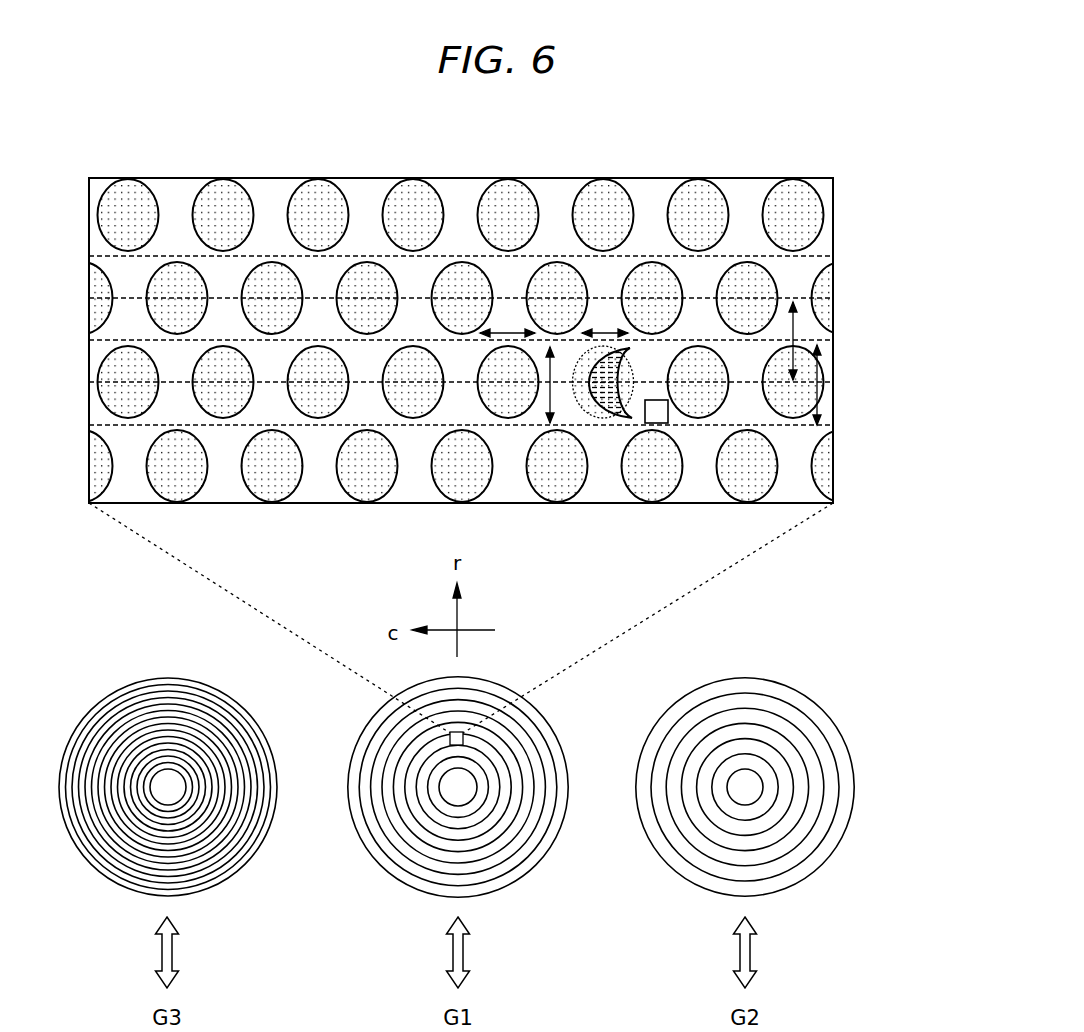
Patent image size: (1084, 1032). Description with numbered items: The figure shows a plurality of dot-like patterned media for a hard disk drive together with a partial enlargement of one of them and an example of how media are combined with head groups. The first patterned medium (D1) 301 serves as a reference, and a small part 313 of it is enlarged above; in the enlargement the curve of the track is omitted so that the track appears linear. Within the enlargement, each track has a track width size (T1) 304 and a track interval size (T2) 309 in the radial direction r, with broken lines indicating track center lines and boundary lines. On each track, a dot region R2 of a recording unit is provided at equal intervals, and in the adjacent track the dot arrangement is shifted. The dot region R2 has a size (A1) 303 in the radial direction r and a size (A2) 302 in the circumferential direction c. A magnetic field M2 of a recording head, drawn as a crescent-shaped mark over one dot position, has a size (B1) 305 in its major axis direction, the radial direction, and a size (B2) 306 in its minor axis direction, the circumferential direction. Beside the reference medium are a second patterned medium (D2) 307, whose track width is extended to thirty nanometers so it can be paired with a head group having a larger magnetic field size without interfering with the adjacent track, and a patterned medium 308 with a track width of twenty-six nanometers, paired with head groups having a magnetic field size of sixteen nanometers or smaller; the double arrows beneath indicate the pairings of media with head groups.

The first patterned medium (D1) 301 is at (551, 737).
The size (A2) of the dot region in the circumferential direction 302 is at (510, 333).
The size (A1) of the dot region in the radial direction 303 is at (552, 398).
The track width size (T1) 304 is at (820, 413).
The size (B1) of the head magnetic field in the major axis direction 305 is at (662, 403).
The size (B2) of the head magnetic field in the minor axis direction 306 is at (608, 333).
The second patterned medium (D2) 307 is at (822, 725).
The patterned medium (D3) 308 is at (226, 703).
The track interval size (T2) 309 is at (795, 329).
The part of the first patterned medium 313 is at (460, 747).
The dot region of a recording unit R2 is at (517, 400).
The magnetic field of a recording head M2 is at (612, 420).